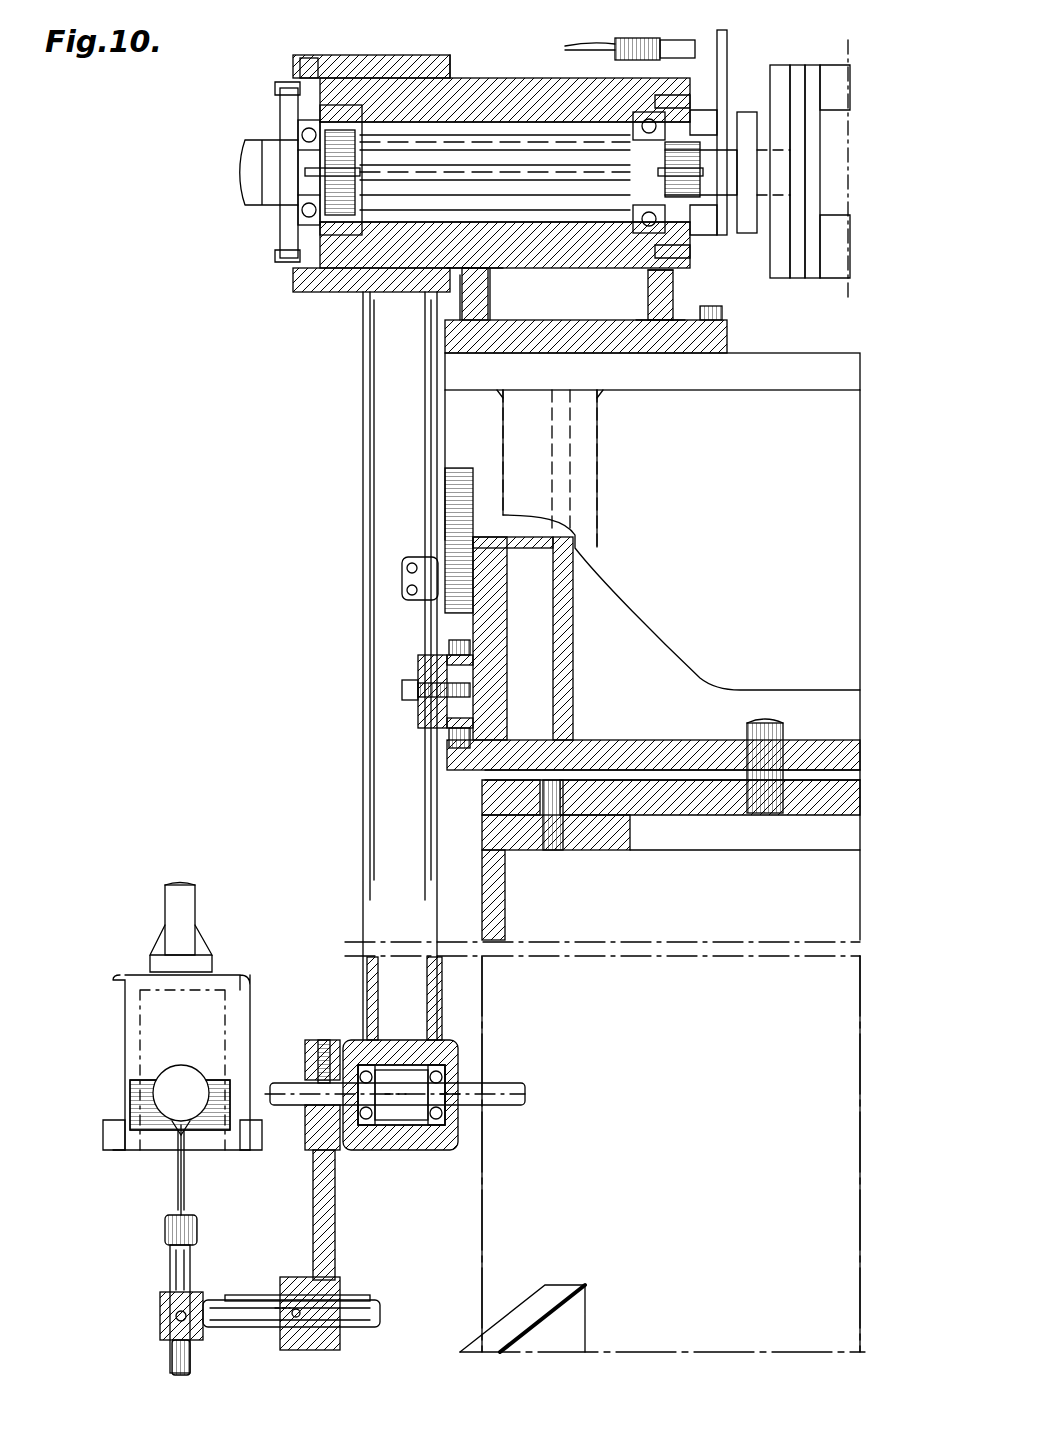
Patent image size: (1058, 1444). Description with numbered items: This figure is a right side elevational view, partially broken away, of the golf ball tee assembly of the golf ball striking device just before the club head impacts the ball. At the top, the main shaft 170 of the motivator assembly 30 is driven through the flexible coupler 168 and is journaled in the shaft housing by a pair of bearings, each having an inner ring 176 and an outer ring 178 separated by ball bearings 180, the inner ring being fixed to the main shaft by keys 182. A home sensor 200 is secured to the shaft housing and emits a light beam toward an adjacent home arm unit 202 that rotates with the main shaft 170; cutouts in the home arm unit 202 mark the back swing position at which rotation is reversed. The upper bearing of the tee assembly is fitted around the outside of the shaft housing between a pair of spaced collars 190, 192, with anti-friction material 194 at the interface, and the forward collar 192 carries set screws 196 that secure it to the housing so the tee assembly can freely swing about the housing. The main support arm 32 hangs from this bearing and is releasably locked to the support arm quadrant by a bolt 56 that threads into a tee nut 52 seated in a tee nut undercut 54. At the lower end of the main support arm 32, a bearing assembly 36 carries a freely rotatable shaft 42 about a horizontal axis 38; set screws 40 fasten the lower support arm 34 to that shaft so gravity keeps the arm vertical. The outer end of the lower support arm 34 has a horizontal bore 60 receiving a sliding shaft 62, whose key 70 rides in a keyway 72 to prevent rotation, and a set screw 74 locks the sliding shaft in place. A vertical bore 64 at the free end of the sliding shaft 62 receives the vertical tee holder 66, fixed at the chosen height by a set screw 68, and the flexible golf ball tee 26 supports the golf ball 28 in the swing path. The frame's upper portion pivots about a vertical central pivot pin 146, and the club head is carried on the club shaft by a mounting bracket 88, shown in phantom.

The golf ball tee 26 is at (185, 1182).
The golf ball 28 is at (182, 1095).
The motivator assembly 30 is at (779, 280).
The main support arm 32 is at (385, 465).
The lower support arm 34 is at (330, 1232).
The bearing assembly 36 is at (450, 1045).
The horizontal axis 38 is at (485, 1098).
The set screws 40 is at (300, 1085).
The freely rotatable shaft 42 is at (385, 1090).
The tee nut 52 is at (480, 660).
The tee nut undercut 54 is at (480, 700).
The bolt 56 is at (400, 688).
The horizontal bore 60 is at (340, 1320).
The sliding shaft 62 is at (255, 1320).
The vertical bore 64 is at (172, 1350).
The vertical tee holder 66 is at (175, 1265).
The set screw 68 is at (165, 1312).
The key 70 is at (240, 1296).
The keyway 72 is at (272, 1305).
The set screw 74 is at (296, 1308).
The mounting bracket 88 is at (110, 1011).
The vertical central pivot pin 146 is at (765, 725).
The flexible coupler 168 is at (790, 80).
The main shaft 170 is at (525, 160).
The inner ring 176 is at (285, 125).
The outer ring 178 is at (315, 105).
The ball bearings 180 is at (300, 112).
The keys 182 is at (700, 150).
The collar 190 is at (480, 52).
The forward collar 192 is at (328, 292).
The anti-friction material 194 is at (395, 55).
The set screws 196 is at (305, 55).
The home sensor 200 is at (650, 40).
The home arm unit 202 is at (727, 50).